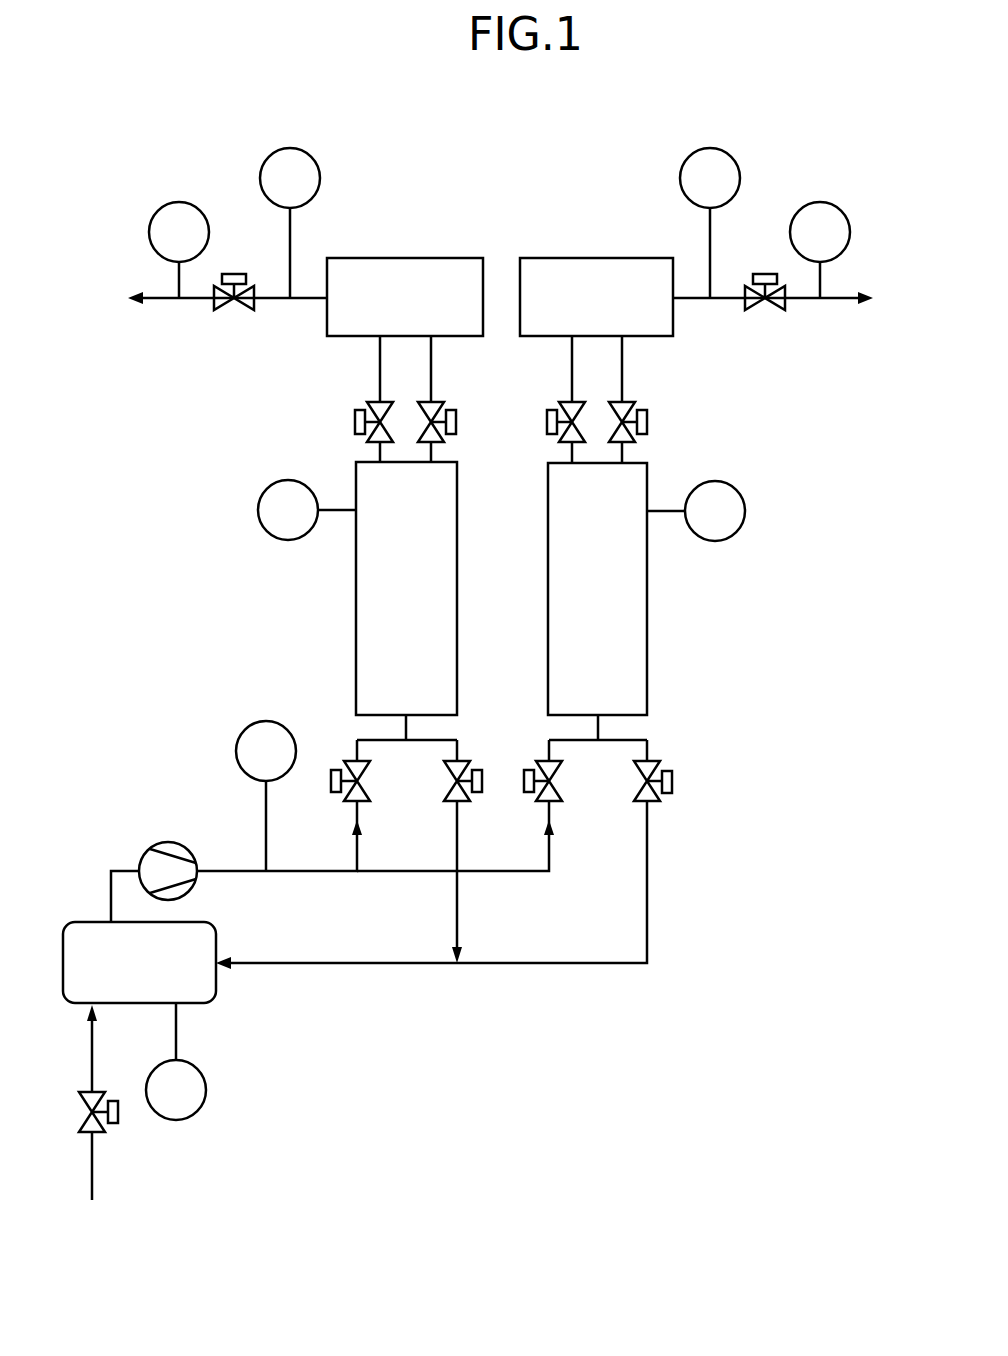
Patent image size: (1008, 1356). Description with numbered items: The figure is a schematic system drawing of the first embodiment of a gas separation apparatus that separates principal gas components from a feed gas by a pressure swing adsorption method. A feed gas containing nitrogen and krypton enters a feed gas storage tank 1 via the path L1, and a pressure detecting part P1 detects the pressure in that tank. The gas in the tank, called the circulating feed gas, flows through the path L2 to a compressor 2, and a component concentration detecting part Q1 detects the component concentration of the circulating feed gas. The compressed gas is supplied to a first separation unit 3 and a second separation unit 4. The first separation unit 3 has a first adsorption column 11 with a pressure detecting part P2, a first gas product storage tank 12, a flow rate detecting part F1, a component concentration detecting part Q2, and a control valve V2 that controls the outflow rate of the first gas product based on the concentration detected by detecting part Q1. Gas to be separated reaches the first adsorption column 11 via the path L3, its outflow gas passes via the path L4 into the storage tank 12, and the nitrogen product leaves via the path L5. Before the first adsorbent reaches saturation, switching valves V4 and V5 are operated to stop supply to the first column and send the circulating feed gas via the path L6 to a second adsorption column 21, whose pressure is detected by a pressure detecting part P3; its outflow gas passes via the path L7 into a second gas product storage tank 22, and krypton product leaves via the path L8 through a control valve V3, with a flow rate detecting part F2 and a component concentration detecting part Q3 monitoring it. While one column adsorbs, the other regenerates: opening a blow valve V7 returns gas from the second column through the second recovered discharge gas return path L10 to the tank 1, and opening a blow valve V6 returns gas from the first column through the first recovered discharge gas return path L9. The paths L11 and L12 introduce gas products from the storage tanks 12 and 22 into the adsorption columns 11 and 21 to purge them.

The feed gas storage tank 1 is at (95, 922).
The compressor 2 is at (150, 849).
The first separation unit 3 is at (395, 220).
The second separation unit 4 is at (607, 220).
The first adsorption column 11 is at (356, 578).
The first gas product storage tank 12 is at (450, 258).
The second adsorption column 21 is at (647, 580).
The second gas product storage tank 22 is at (551, 258).
The flow rate detecting part F1 is at (156, 209).
The flow rate detecting part F2 is at (842, 210).
The component concentration detecting part Q1 is at (253, 725).
The component concentration detecting part Q2 is at (269, 155).
The component concentration detecting part Q3 is at (689, 157).
The pressure detecting part P1 is at (203, 1077).
The pressure detecting part P2 is at (266, 490).
The pressure detecting part P3 is at (737, 491).
The control valve V2 is at (233, 273).
The control valve V3 is at (785, 306).
The switching valve V4 is at (336, 769).
The switching valve V5 is at (528, 769).
The blow valve V6 is at (478, 769).
The blow valve V7 is at (672, 782).
The path L1 is at (93, 1192).
The path L2 is at (128, 870).
The path L3 is at (357, 858).
The path L4 is at (380, 372).
The path L5 is at (192, 300).
The path L6 is at (552, 848).
The path L7 is at (572, 392).
The path L8 is at (723, 300).
The first recovered discharge gas return path L9 is at (457, 910).
The second recovered discharge gas return path L10 is at (648, 912).
The path L11 is at (431, 392).
The path L12 is at (622, 374).